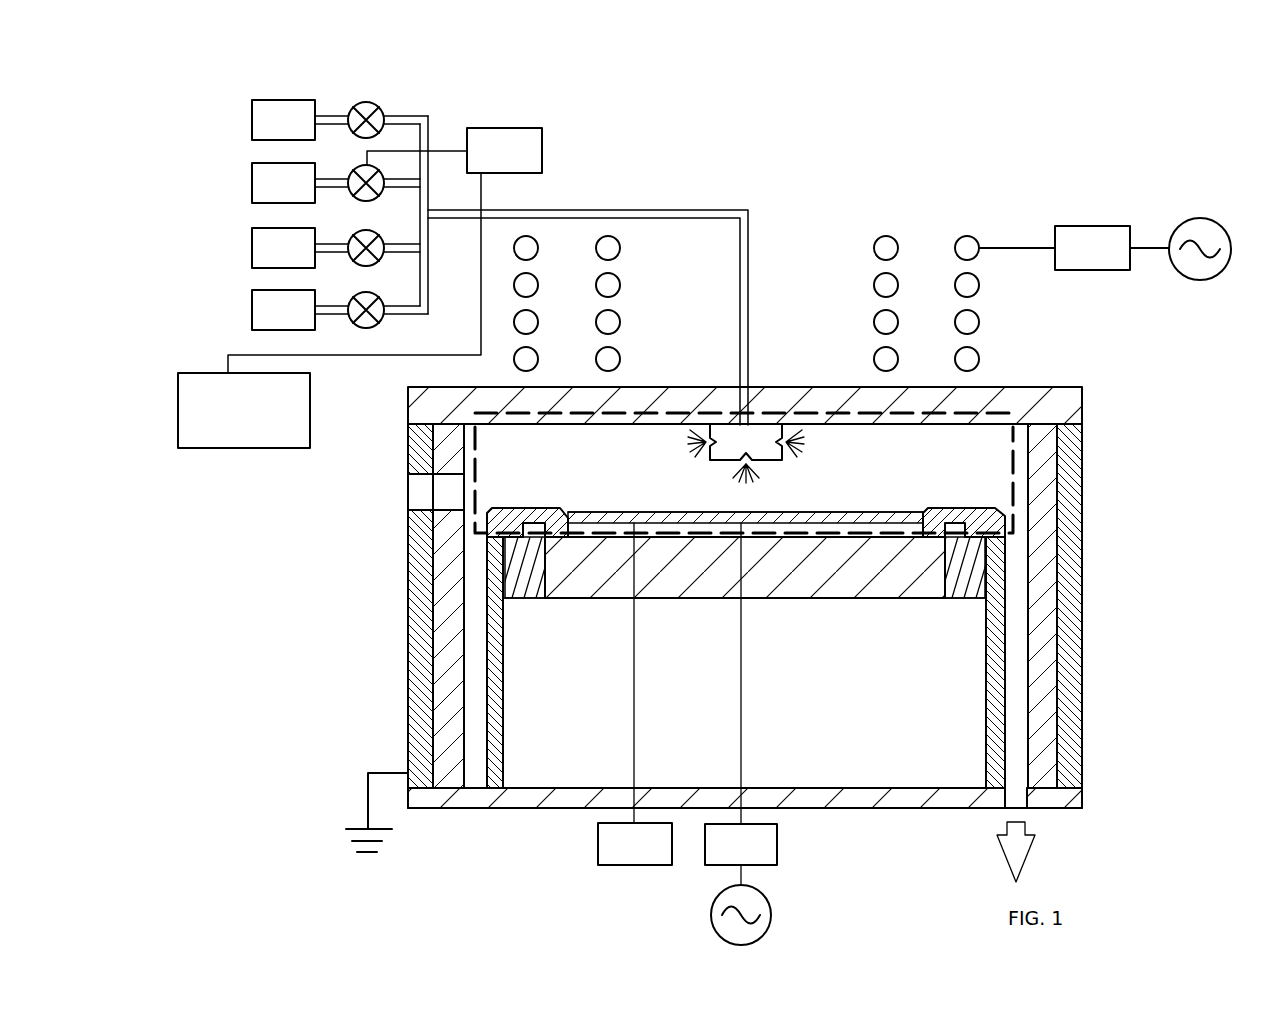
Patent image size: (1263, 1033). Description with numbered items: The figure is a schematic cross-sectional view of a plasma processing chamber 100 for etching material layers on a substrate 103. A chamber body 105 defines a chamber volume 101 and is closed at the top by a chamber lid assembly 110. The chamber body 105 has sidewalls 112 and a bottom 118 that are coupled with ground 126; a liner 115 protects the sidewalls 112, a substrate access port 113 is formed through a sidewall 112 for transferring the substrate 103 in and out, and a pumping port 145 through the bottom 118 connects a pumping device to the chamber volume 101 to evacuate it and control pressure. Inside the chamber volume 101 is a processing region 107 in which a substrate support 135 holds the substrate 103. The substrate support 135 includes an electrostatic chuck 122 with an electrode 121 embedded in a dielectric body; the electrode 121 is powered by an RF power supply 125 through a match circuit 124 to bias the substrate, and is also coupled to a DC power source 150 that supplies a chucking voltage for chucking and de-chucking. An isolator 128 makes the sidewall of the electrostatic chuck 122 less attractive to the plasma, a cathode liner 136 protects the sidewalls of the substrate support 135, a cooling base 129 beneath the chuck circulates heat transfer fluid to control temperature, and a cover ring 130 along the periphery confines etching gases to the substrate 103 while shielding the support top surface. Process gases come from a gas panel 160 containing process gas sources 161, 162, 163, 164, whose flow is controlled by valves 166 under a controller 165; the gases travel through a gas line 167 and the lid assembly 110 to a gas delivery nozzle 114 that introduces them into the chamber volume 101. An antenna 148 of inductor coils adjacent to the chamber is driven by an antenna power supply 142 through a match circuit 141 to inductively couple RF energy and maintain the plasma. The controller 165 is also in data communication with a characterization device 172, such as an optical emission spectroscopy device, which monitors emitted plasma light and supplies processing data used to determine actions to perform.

The processing chamber 100 is at (1160, 383).
The chamber volume 101 is at (744, 480).
The substrate 103 is at (638, 508).
The chamber body 105 is at (1082, 475).
The processing region 107 is at (639, 410).
The chamber lid assembly 110 is at (1027, 388).
The sidewalls 112 is at (1082, 565).
The substrate access port 113 is at (407, 492).
The gas delivery nozzle 114 is at (774, 461).
The liner 115 is at (447, 640).
The bottom 118 is at (887, 808).
The electrode 121 is at (768, 523).
The electrostatic chuck 122 is at (698, 527).
The match circuit 124 is at (741, 854).
The RF power supply 125 is at (773, 922).
The ground 126 is at (367, 800).
The isolator 128 is at (520, 598).
The cooling base 129 is at (855, 573).
The cover ring 130 is at (968, 507).
The substrate support 135 is at (744, 693).
The cathode liner 136 is at (987, 735).
The match circuit 141 is at (1082, 226).
The antenna power supply 142 is at (1195, 220).
The pumping port 145 is at (1020, 808).
The antenna 148 is at (886, 236).
The DC power source 150 is at (635, 694).
The gas panel 160 is at (325, 80).
The process gas source 161 is at (250, 118).
The process gas source 162 is at (250, 180).
The process gas source 163 is at (250, 247).
The process gas source 164 is at (250, 309).
The controller 165 is at (454, 150).
The valves 166 is at (364, 201).
The gas line 167 is at (620, 210).
The characterization device 172 is at (329, 310).